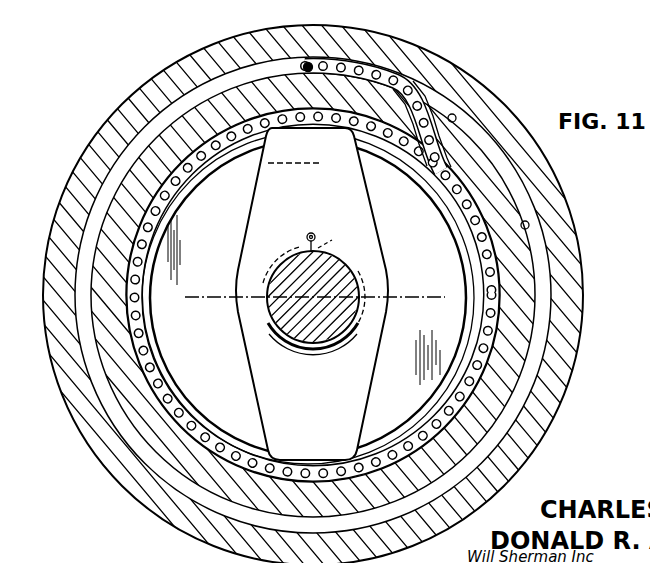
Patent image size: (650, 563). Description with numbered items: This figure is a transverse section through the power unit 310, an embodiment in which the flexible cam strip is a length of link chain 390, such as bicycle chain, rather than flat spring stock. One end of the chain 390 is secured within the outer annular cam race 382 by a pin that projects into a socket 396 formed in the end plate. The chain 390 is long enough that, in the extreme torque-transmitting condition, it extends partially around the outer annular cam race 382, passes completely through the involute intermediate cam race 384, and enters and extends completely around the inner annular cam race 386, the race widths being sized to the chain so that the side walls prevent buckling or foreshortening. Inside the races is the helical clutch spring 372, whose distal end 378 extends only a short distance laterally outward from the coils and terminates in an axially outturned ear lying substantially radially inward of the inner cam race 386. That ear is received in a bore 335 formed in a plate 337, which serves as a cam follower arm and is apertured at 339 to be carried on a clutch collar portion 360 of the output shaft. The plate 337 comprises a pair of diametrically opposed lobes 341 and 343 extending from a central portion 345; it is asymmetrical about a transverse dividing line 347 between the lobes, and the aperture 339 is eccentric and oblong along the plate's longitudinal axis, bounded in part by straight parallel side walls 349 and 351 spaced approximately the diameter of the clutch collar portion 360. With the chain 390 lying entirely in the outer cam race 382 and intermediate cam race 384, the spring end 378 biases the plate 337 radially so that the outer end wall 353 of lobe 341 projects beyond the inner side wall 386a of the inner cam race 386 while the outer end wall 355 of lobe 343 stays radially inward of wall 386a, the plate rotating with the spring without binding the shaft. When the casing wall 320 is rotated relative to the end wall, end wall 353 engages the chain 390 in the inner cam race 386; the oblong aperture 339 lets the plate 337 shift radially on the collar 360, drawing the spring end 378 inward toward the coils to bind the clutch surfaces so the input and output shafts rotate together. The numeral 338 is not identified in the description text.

The power unit 310 is at (206, 38).
The casing wall 320 is at (138, 88).
The housing portion 338 is at (520, 0).
The socket 396 is at (308, 64).
The outer end wall of lobe 341 353 is at (270, 72).
The intermediate cam race 384 is at (442, 143).
The chain 390 is at (548, 268).
The outer annular cam race 382 is at (540, 346).
The inner annular cam race 386 is at (418, 157).
The inner side wall of inner cam race 386a is at (432, 173).
The outer end wall of lobe 343 355 is at (318, 508).
The transverse dividing line 347 is at (424, 290).
The central portion 345 is at (237, 268).
The lobe 341 is at (280, 152).
The plate 337 is at (270, 212).
The straight parallel side wall 351 is at (360, 313).
The straight parallel side wall 349 is at (272, 308).
The clutch collar portion 360 is at (318, 327).
The helical clutch spring 372 is at (270, 343).
The bore 335 is at (312, 232).
The distal end of spring 378 is at (343, 240).
The aperture 339 is at (332, 347).
The lobe 343 is at (343, 437).